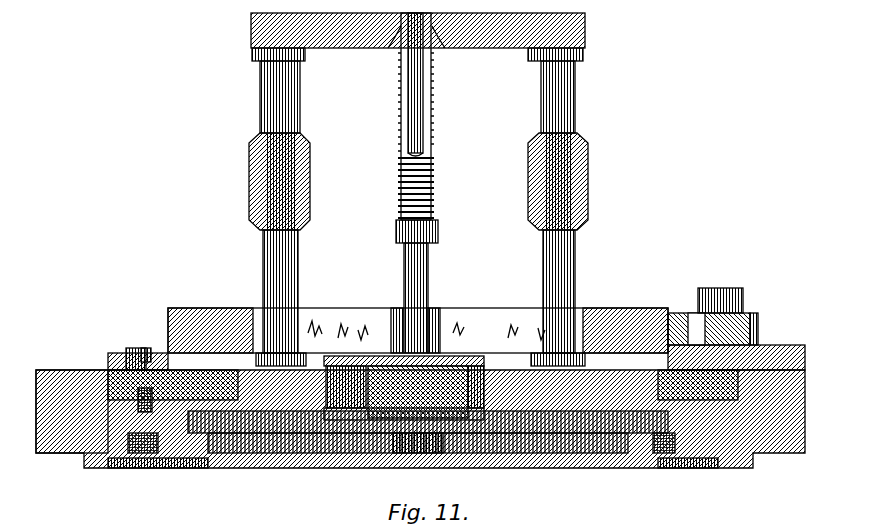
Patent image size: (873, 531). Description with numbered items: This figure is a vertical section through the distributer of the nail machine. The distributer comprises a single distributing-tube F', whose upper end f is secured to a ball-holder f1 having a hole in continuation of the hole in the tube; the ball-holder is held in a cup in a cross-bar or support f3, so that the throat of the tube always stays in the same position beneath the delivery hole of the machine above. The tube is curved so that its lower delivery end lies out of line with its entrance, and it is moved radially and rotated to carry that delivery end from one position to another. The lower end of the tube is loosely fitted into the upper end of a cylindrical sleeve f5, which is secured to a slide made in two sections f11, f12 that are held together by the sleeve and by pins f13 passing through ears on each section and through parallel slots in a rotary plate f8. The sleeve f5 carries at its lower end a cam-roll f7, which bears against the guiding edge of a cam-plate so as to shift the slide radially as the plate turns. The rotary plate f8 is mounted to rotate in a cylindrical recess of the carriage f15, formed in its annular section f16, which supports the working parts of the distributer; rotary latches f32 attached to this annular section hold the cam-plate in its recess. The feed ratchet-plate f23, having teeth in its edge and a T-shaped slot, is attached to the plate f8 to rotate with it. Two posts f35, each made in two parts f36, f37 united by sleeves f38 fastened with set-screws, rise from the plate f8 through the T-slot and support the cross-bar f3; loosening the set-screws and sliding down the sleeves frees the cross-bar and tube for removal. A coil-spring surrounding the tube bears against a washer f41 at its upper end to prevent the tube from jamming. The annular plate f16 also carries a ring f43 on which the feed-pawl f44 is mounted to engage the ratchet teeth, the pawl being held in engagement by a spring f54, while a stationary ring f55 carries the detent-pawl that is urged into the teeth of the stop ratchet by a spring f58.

The cross-bar f3 is at (492, 35).
The ball-holder f1 is at (382, 42).
The washer f41 is at (392, 50).
The upper end of distributing-tube f is at (424, 60).
The distributing-tube F' is at (422, 183).
The post part f37 is at (580, 97).
The sleeve f38 is at (584, 163).
The post part f36 is at (575, 247).
The post f35 is at (285, 263).
The pin f13 is at (345, 345).
The feed ratchet-plate f23 is at (236, 302).
The slide section f11 is at (466, 340).
The cylindrical sleeve f5 is at (468, 300).
The spring f54 is at (742, 308).
The feed-pawl f44 is at (677, 305).
The ring f43 is at (765, 340).
The stationary ring f55 is at (100, 360).
The spring f58 is at (128, 345).
The rotary plate f8 is at (298, 405).
The slide section f12 is at (360, 425).
The cam-roll f7 is at (410, 450).
The carriage f15 is at (60, 448).
The annular section f16 is at (654, 447).
The rotary latch f32 is at (735, 455).